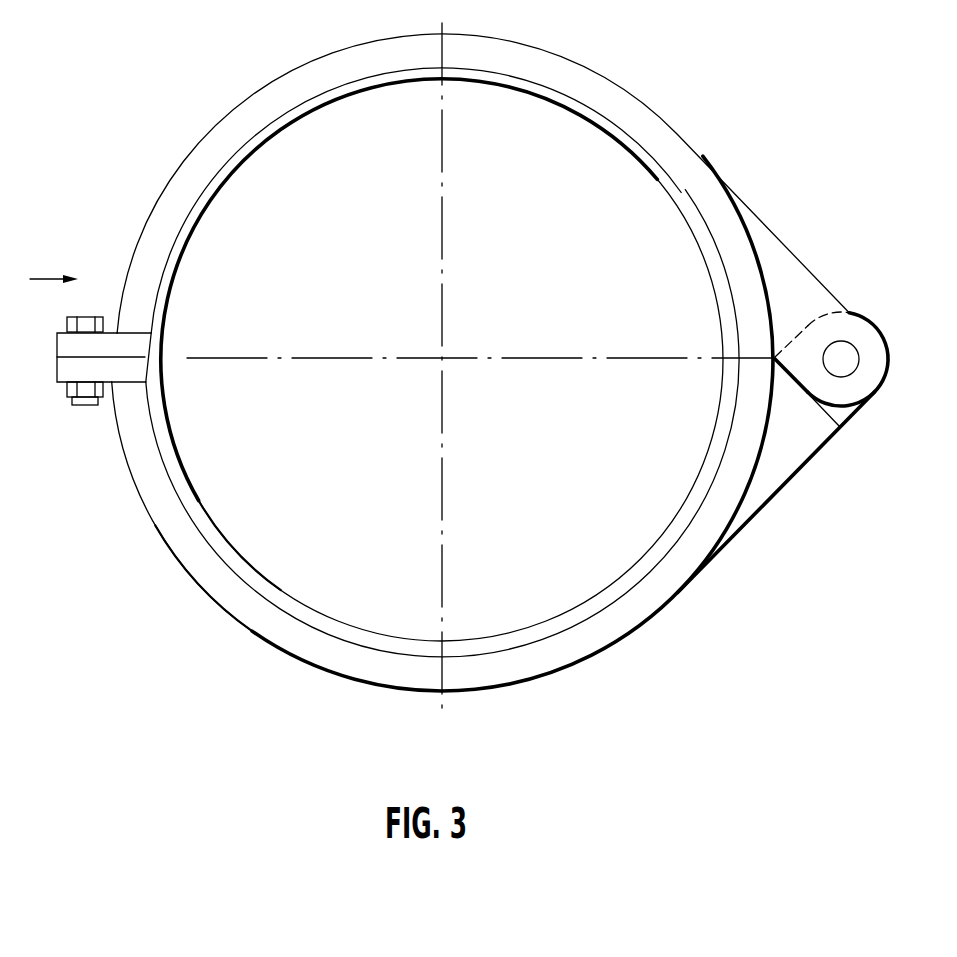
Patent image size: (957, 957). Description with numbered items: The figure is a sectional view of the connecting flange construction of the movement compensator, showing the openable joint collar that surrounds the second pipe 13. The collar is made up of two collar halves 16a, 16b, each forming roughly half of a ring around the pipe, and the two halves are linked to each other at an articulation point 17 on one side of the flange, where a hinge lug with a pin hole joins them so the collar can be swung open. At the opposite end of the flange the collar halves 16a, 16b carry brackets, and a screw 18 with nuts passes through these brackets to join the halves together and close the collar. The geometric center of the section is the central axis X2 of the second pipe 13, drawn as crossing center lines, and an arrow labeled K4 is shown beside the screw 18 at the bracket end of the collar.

The second pipe 13 is at (548, 94).
The collar half 16a is at (300, 73).
The collar half 16b is at (591, 632).
The articulation point 17 is at (843, 348).
The screw 18 is at (102, 317).
The central axis X2 is at (443, 358).
The clamping force K4 is at (47, 274).